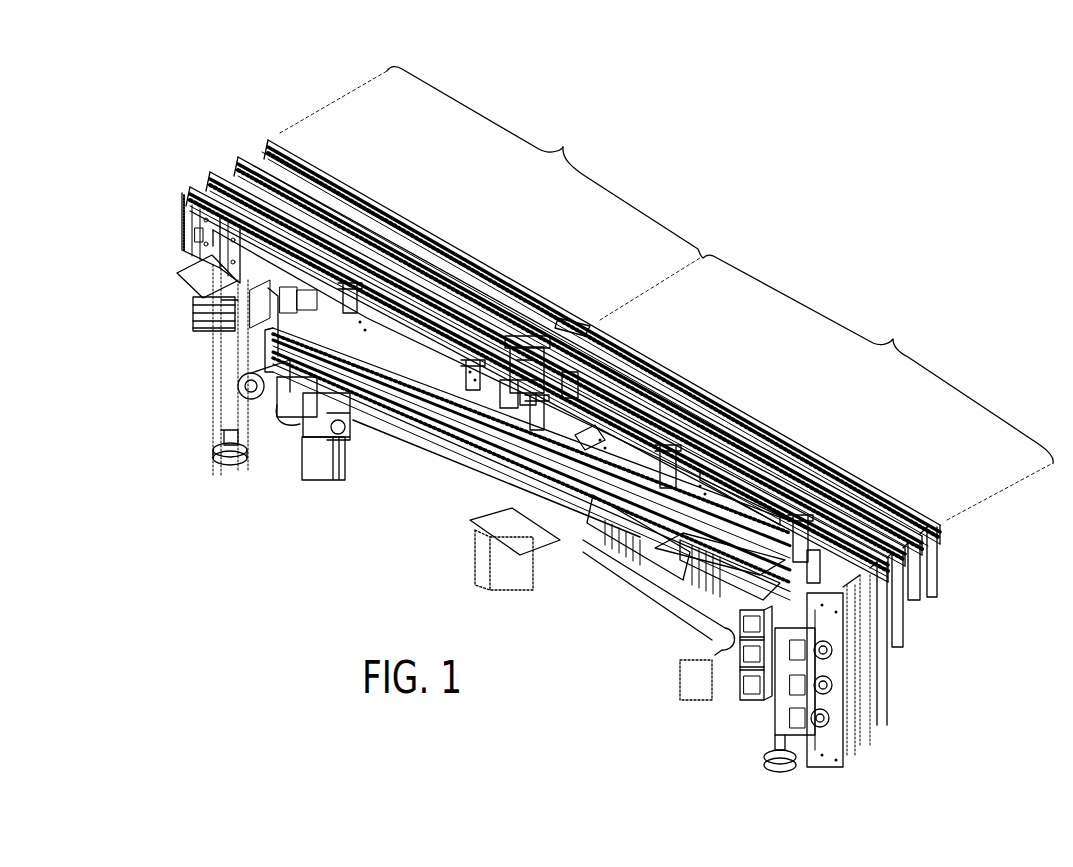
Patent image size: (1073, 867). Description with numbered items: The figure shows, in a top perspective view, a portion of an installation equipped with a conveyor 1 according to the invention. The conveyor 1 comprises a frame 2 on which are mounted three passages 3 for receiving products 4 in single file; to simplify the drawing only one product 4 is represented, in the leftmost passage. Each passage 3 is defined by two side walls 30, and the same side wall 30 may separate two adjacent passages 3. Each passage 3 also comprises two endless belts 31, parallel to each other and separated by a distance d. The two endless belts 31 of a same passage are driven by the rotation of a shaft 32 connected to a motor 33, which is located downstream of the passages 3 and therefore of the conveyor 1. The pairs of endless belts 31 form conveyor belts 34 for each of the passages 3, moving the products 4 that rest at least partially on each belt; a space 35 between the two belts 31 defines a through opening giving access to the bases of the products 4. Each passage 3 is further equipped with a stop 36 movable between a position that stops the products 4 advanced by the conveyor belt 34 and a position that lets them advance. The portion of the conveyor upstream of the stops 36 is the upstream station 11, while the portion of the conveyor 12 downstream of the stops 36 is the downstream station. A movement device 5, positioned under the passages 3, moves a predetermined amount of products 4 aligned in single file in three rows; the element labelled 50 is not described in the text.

The conveyor 1 is at (761, 324).
The upstream station 11 is at (429, 109).
The downstream portion of the conveyor 12 is at (808, 333).
The frame 2 is at (195, 368).
The passages 3 is at (246, 131).
The side walls 30 is at (415, 300).
The endless belts 31 is at (933, 553).
The shaft 32 is at (793, 710).
The motor 33 is at (747, 687).
The conveyor belts 34 is at (846, 489).
The space 35 is at (782, 455).
The stop 36 is at (566, 325).
The product 4 is at (523, 345).
The movement device 5 is at (490, 584).
The linear guide 50 is at (385, 447).
The distance d is at (855, 746).